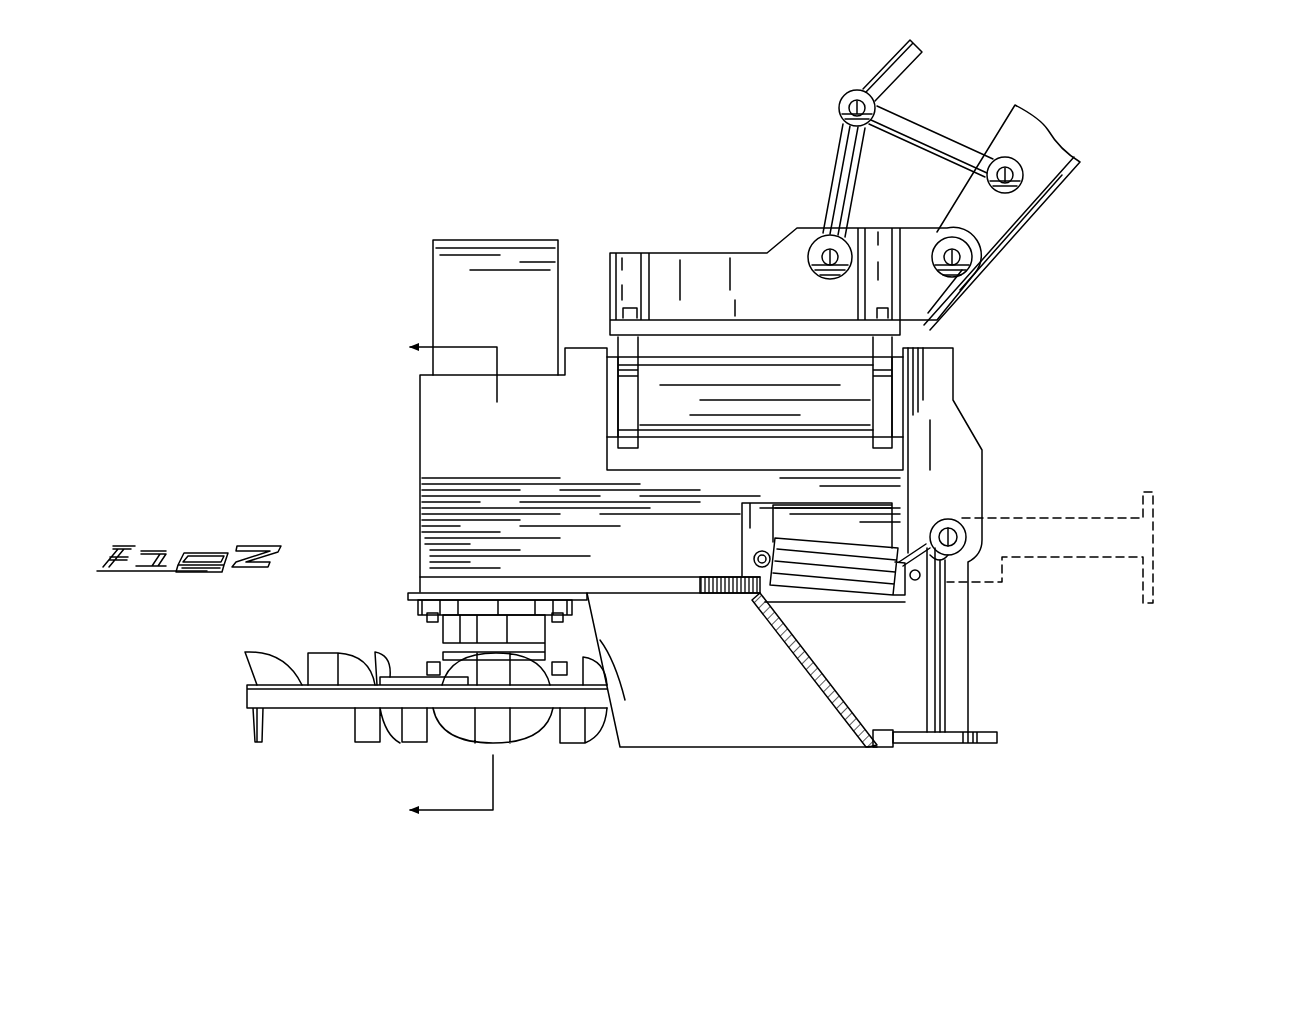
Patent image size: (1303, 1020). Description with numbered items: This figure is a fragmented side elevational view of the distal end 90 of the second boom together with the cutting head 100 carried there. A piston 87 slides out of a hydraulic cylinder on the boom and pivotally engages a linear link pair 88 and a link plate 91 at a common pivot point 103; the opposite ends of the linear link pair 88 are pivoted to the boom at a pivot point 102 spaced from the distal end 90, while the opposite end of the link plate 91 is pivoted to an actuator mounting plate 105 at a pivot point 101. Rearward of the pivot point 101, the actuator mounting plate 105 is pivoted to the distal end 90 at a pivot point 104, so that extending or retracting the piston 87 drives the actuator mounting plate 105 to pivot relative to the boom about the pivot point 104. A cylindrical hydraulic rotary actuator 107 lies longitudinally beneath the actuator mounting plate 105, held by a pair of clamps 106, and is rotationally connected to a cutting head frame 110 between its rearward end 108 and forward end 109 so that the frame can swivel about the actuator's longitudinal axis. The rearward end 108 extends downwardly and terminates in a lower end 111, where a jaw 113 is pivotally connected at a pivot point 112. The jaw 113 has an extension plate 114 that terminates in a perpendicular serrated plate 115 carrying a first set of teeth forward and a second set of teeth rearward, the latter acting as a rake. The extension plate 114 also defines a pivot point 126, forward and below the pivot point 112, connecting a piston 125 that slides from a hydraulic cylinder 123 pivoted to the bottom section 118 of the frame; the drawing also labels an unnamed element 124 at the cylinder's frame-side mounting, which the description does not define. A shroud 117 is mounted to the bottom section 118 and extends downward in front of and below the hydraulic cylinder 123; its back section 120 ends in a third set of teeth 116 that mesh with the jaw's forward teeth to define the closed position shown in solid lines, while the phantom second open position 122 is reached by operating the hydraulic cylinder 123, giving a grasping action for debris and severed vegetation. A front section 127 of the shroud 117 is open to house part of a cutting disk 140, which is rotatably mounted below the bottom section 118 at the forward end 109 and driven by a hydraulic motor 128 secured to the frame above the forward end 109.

The cutting head 100 is at (362, 170).
The piston 87 is at (897, 63).
The linear link pair 88 is at (937, 143).
The distal end 90 is at (1007, 215).
The link plate 91 is at (847, 163).
The pivot point 101 is at (830, 253).
The pivot point 102 is at (1017, 162).
The pivot point 103 is at (840, 97).
The pivot point 104 is at (973, 272).
The actuator mounting plate 105 is at (697, 280).
The clamps 106 is at (627, 397).
The hydraulic rotary actuator 107 is at (788, 410).
The rearward end 108 is at (975, 428).
The forward end 109 is at (442, 412).
The cutting head frame 110 is at (412, 479).
The lower end 111 is at (968, 547).
The pivot point 112 is at (957, 523).
The jaw 113 is at (978, 650).
The extension plate 114 is at (947, 680).
The serrated plate 115 is at (1153, 587).
The third set of teeth 116 is at (880, 732).
The shroud 117 is at (720, 693).
The bottom section 118 is at (613, 590).
The back section 120 is at (810, 730).
The second open position 122 is at (1160, 538).
The hydraulic cylinder 123 is at (823, 567).
The pin 124 is at (765, 550).
The piston 125 is at (947, 577).
The pivot point 126 is at (920, 572).
The front section 127 is at (620, 677).
The hydraulic motor 128 is at (465, 298).
The cutting disk 140 is at (332, 698).